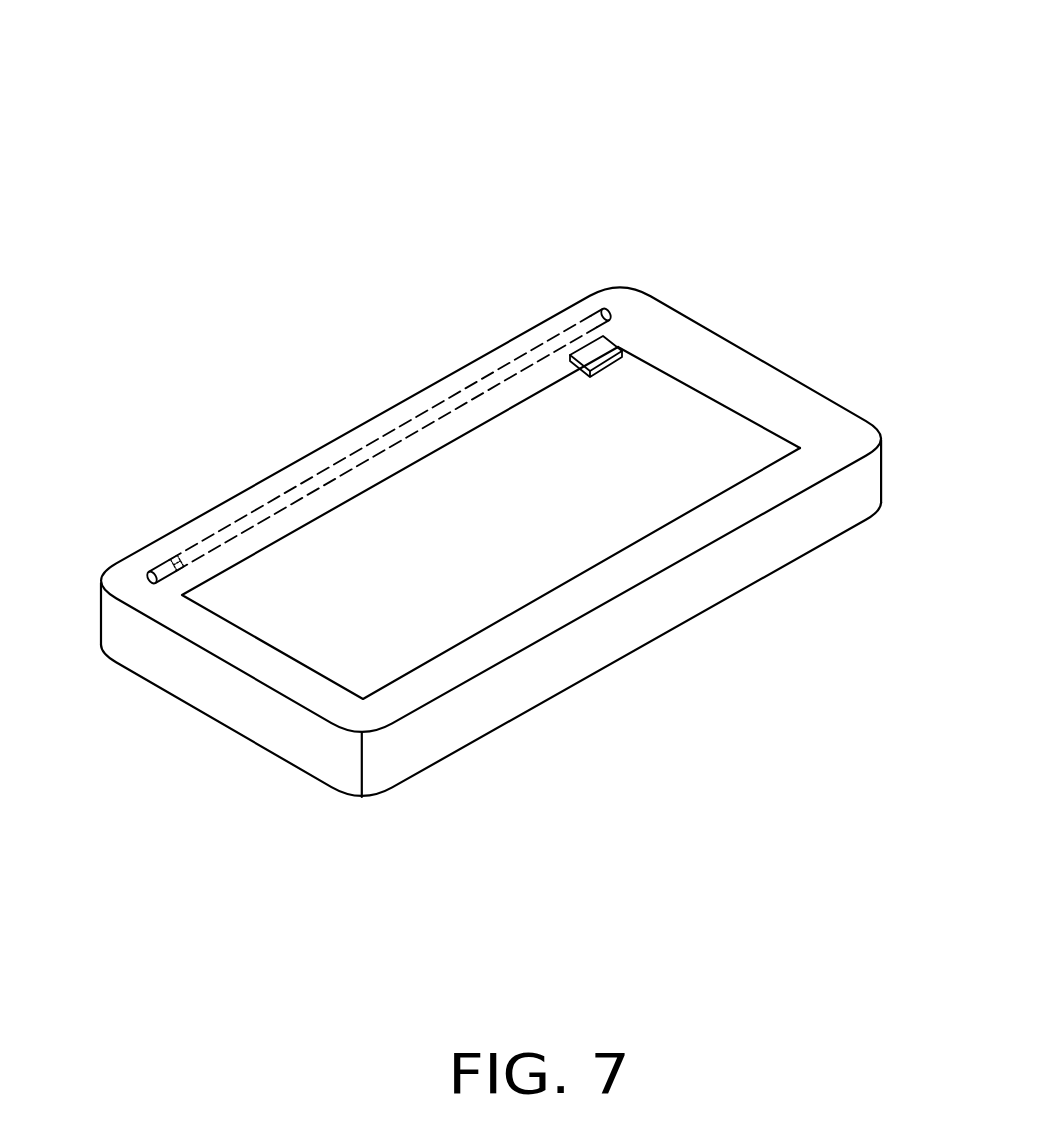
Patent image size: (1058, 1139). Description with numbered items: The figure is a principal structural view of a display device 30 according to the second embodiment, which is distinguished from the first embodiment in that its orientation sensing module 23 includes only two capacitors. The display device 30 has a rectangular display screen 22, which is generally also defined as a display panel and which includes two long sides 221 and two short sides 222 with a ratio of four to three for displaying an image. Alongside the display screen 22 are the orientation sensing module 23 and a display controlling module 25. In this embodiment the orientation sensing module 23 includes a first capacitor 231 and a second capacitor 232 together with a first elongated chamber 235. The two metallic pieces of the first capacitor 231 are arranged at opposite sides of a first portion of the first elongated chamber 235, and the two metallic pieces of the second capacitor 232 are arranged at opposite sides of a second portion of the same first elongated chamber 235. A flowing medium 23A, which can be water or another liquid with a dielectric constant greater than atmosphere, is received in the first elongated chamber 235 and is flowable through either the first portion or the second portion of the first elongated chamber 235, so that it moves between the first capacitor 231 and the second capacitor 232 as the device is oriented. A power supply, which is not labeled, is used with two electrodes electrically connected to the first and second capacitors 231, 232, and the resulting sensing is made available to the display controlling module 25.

The display device 30 is at (491, 35).
The display screen 22 is at (620, 500).
The long sides 221 is at (763, 472).
The short sides 222 is at (783, 437).
The orientation sensing module 23 is at (575, 238).
The first capacitor 231 is at (597, 320).
The second capacitor 232 is at (153, 572).
The first elongated chamber 235 is at (500, 372).
The flowing medium 23A is at (178, 563).
The display controlling module 25 is at (612, 336).